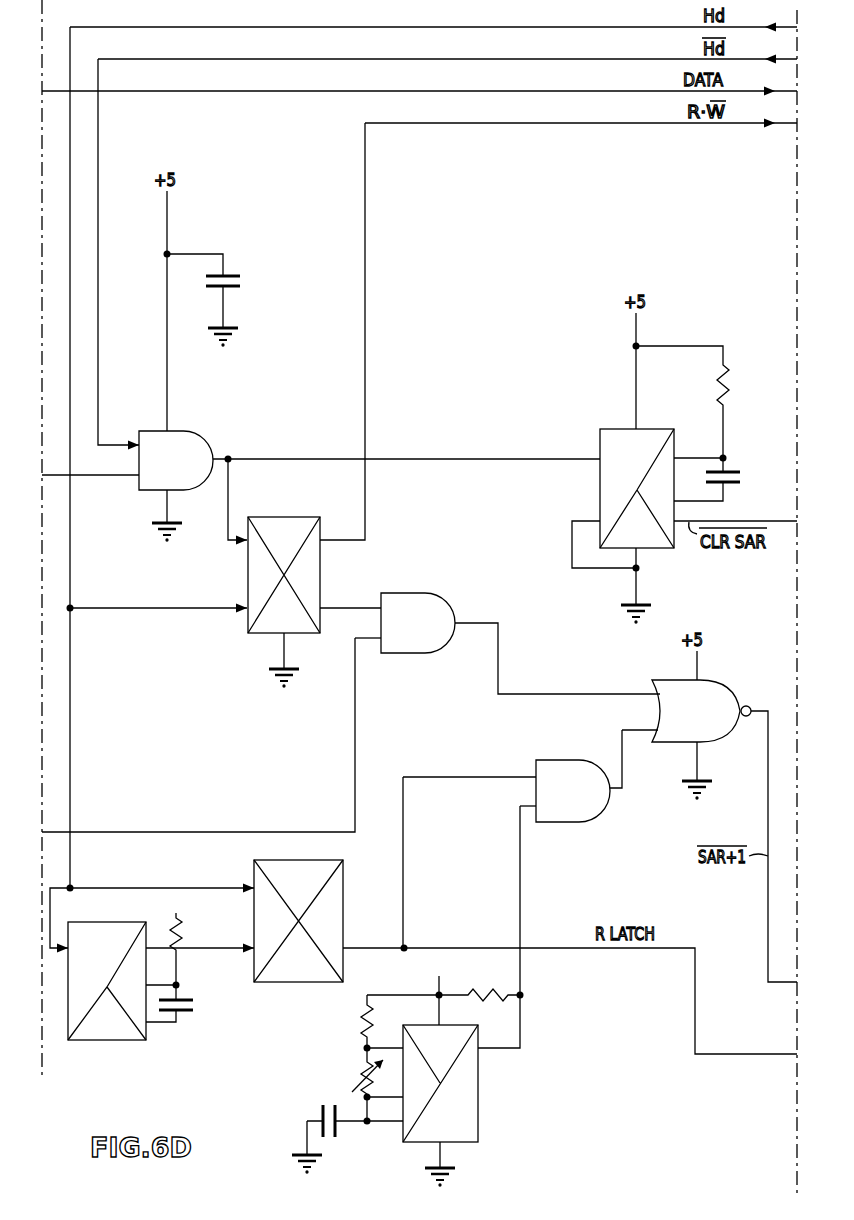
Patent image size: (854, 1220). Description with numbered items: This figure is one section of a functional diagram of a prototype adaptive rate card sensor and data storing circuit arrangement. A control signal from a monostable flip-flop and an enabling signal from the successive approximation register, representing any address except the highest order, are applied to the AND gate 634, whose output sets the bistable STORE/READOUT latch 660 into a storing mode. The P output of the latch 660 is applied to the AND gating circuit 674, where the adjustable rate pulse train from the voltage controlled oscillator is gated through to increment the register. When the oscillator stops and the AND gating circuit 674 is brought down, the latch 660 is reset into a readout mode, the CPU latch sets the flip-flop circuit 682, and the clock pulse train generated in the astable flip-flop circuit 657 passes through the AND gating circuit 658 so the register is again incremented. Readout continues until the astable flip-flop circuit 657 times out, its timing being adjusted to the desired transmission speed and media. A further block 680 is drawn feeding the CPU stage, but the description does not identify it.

The AND gate 634 is at (205, 447).
The STORE/READOUT latch 660 is at (252, 617).
The AND gating circuit 674 is at (418, 596).
The AND gating circuit 658 is at (579, 764).
The CPU latch flip-flop circuit 682 is at (272, 984).
The latch 680 is at (92, 1042).
The astable flip-flop circuit 657 is at (479, 1101).